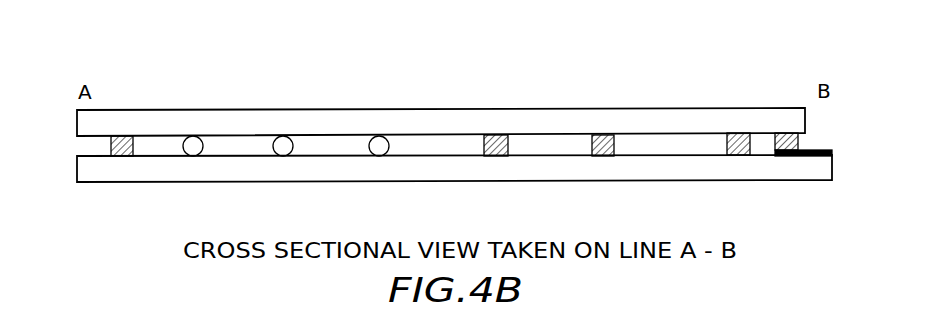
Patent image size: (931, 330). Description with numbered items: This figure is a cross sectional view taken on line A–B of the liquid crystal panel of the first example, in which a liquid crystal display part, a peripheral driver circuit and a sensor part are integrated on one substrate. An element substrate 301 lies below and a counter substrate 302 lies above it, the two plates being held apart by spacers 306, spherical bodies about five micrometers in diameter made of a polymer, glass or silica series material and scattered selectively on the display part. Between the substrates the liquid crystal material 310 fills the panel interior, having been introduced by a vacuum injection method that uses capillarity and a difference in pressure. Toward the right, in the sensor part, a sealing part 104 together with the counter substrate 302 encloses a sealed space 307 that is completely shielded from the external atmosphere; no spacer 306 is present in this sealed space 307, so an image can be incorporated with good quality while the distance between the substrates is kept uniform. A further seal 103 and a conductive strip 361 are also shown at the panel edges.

The counter substrate 302 is at (306, 118).
The element substrate 301 is at (622, 170).
The sealant 103 is at (502, 135).
The sealing part 104 is at (735, 135).
The sealed space 307 is at (657, 142).
The terminal electrode 361 is at (818, 157).
The spacer 306 is at (283, 148).
The liquid crystal material 310 is at (333, 144).